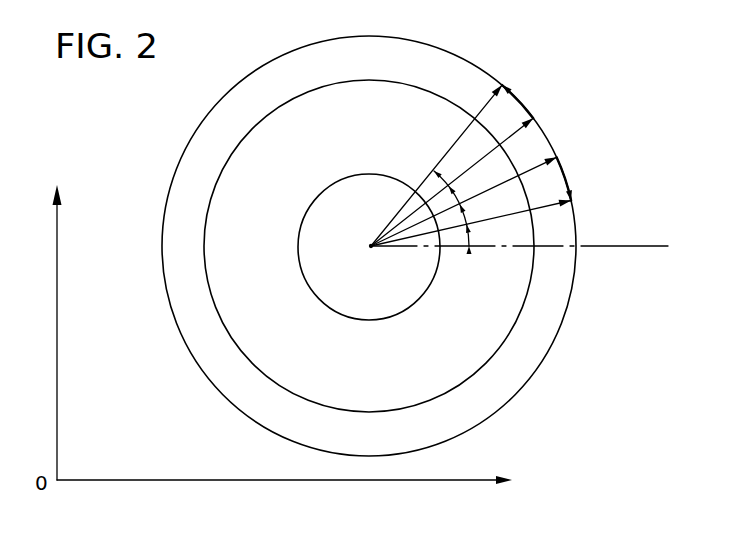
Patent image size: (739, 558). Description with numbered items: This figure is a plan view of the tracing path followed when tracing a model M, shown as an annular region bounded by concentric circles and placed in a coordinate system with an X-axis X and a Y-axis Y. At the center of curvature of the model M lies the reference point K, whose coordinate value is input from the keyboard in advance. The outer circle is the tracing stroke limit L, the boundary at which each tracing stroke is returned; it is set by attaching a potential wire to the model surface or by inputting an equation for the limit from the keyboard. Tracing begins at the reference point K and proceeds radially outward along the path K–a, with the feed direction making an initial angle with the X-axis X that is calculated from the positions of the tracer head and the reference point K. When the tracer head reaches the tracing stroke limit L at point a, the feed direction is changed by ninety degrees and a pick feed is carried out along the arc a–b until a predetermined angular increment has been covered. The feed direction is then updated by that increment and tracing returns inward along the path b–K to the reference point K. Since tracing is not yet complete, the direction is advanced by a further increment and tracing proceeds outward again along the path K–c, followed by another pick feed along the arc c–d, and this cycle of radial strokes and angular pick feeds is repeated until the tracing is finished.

The tracing stroke limit L is at (550, 351).
The model M is at (367, 80).
The reference point K is at (371, 246).
The path point a is at (479, 218).
The path point b is at (477, 192).
The path point c is at (457, 171).
The path point d is at (447, 153).
The X-axis X is at (284, 495).
The Y-axis Y is at (47, 332).